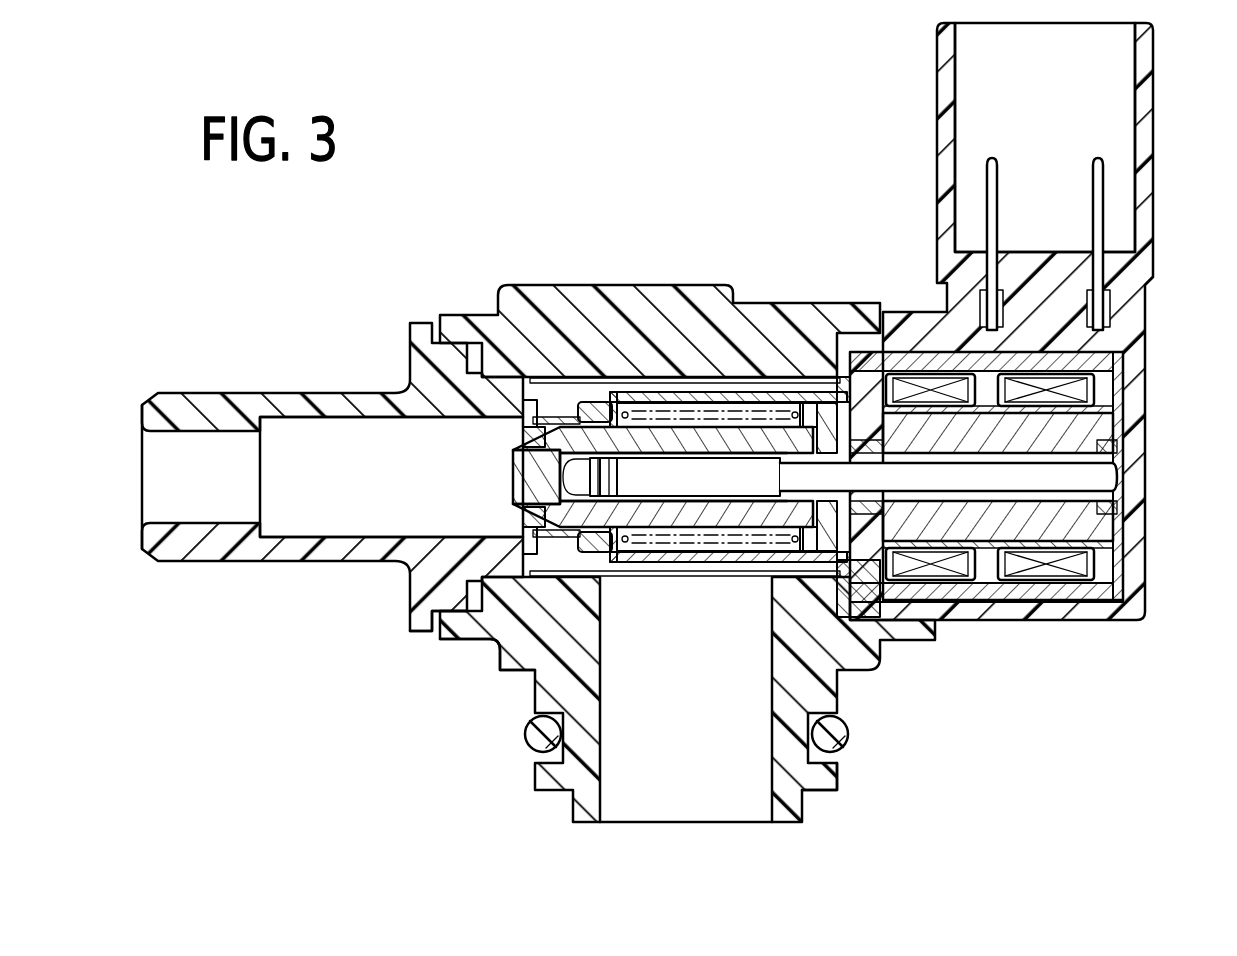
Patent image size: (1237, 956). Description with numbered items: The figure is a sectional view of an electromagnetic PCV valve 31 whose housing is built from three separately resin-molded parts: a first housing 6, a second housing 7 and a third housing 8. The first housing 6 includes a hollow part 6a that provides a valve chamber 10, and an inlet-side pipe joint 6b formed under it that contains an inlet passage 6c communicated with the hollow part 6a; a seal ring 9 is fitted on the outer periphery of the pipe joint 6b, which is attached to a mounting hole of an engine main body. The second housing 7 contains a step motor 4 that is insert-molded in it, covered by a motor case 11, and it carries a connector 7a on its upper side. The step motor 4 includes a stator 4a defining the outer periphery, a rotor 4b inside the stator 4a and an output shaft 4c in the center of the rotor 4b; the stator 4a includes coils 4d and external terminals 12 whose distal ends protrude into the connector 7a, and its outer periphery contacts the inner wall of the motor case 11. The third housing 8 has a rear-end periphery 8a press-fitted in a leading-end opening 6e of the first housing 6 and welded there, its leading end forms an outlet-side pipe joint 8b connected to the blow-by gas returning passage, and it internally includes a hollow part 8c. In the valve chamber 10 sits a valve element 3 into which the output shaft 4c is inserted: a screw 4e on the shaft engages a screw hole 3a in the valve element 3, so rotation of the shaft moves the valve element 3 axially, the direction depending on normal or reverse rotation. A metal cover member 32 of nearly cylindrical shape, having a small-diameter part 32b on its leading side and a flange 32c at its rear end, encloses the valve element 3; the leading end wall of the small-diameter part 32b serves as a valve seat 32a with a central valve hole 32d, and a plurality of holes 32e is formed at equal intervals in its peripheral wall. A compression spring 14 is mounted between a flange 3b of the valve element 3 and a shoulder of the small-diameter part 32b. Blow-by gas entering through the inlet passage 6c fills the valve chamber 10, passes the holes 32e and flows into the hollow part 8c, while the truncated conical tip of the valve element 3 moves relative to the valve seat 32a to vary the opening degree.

The electromagnetic PCV valve 31 is at (497, 145).
The valve element 3 is at (648, 428).
The screw hole 3a is at (672, 500).
The flange 3b is at (828, 403).
The step motor 4 is at (913, 514).
The stator 4a is at (1098, 594).
The rotor 4b is at (1115, 432).
The output shaft 4c is at (1118, 480).
The coils 4d is at (1123, 365).
The screw 4e is at (742, 500).
The first housing 6 is at (662, 300).
The hollow part 6a is at (745, 385).
The inlet-side pipe joint 6b is at (838, 775).
The inlet passage 6c is at (598, 795).
The leading-end opening 6e is at (560, 565).
The second housing 7 is at (895, 352).
The connector 7a is at (1152, 90).
The third housing 8 is at (395, 380).
The rear-end periphery 8a is at (480, 635).
The outlet-side pipe joint 8b is at (175, 555).
The hollow part 8c is at (305, 535).
The seal ring 9 is at (850, 734).
The valve chamber 10 is at (500, 655).
The motor case 11 is at (1045, 603).
The external terminals 12 is at (993, 182).
The compression spring 14 is at (783, 395).
The cover member 32 is at (712, 392).
The valve seat 32a is at (533, 400).
The small-diameter part 32b is at (577, 400).
The flange 32c is at (845, 640).
The valve hole 32d is at (523, 439).
The holes 32e is at (613, 405).